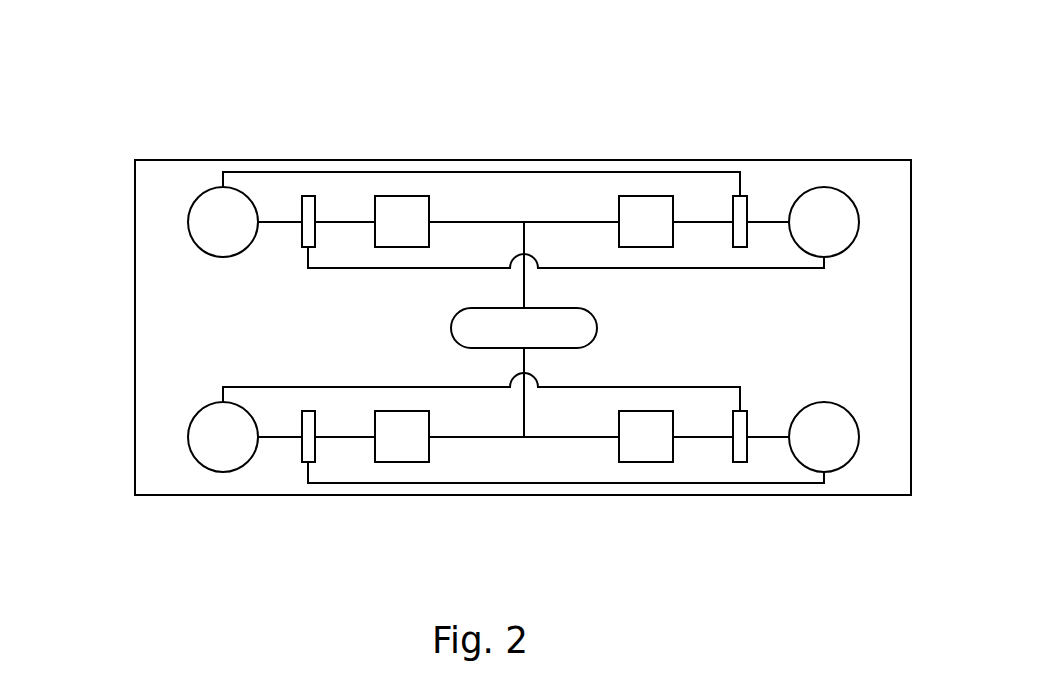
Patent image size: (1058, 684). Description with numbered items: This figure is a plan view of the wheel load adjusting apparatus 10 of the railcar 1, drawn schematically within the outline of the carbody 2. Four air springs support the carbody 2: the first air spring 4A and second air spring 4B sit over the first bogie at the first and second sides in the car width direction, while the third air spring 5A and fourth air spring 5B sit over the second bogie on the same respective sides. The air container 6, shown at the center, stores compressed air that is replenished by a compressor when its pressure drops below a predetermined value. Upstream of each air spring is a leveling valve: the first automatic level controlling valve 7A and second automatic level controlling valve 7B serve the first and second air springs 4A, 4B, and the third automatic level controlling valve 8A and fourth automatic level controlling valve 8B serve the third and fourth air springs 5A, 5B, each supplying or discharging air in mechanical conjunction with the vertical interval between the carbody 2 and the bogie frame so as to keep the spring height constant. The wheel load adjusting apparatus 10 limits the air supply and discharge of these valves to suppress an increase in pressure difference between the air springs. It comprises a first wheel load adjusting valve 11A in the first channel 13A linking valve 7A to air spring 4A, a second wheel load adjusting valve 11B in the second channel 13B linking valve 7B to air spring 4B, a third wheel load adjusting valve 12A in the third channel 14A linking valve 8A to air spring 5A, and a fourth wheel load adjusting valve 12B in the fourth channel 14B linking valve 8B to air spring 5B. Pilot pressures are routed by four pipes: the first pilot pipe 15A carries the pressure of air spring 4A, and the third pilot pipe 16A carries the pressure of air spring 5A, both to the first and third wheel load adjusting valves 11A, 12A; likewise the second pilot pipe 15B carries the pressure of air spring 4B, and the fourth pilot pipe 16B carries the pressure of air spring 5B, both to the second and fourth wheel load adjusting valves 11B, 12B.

The railcar 1 is at (117, 120).
The carbody 2 is at (135, 190).
The wheel load adjusting apparatus 10 is at (763, 128).
The air container 6 is at (451, 326).
The third air spring 5A is at (193, 205).
The first air spring 4A is at (858, 207).
The third channel 14A is at (274, 220).
The first channel 13A is at (772, 220).
The third wheel load adjusting valve 12A is at (323, 203).
The first wheel load adjusting valve 11A is at (733, 203).
The third automatic level controlling valve 8A is at (397, 196).
The first automatic level controlling valve 7A is at (652, 196).
The third pilot pipe 16A is at (473, 172).
The first pilot pipe 15A is at (678, 268).
The fourth air spring 5B is at (193, 455).
The second air spring 4B is at (855, 452).
The fourth channel 14B is at (274, 438).
The second channel 13B is at (768, 438).
The fourth wheel load adjusting valve 12B is at (316, 453).
The second wheel load adjusting valve 11B is at (732, 453).
The fourth automatic level controlling valve 8B is at (393, 462).
The second automatic level controlling valve 7B is at (653, 462).
The fourth pilot pipe 16B is at (338, 387).
The second pilot pipe 15B is at (473, 483).